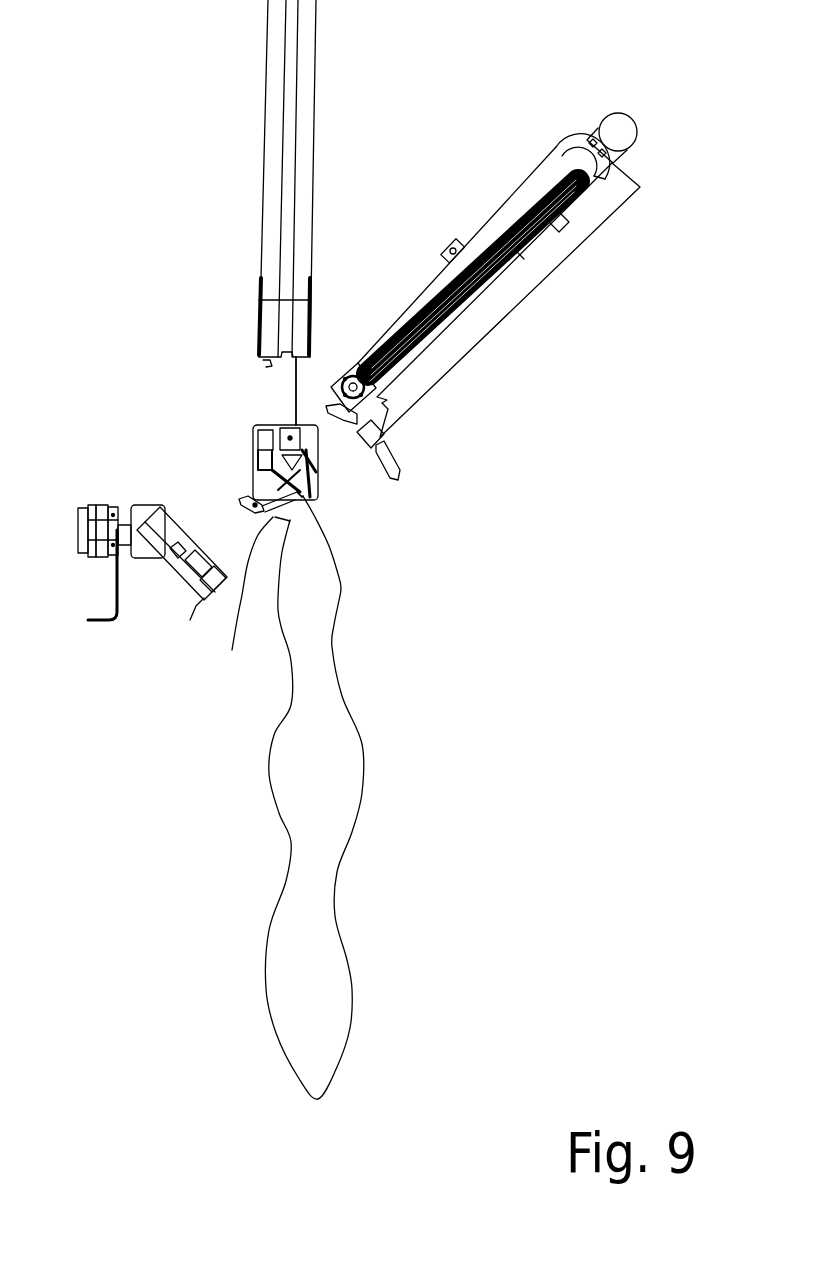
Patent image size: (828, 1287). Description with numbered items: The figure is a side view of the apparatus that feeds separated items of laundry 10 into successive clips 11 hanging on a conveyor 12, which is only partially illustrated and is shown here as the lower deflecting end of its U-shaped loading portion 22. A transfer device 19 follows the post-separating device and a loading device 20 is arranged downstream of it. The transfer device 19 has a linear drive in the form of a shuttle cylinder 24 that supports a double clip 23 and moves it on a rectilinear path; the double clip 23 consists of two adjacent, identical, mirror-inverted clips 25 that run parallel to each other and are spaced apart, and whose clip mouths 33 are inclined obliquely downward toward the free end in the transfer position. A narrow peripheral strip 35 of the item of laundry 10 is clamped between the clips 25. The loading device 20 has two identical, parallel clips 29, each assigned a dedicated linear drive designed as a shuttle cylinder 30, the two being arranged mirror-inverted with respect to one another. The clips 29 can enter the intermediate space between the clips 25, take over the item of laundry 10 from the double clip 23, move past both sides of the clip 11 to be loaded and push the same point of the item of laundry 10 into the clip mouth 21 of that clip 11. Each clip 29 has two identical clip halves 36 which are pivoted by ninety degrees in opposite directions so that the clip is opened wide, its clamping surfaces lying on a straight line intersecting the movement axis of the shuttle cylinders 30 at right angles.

The item of laundry 10 is at (325, 996).
The clip 11 is at (253, 450).
The conveyor 12 is at (363, 183).
The U-shaped loading portion 22 is at (287, 183).
The transfer device 19 is at (136, 537).
The loading device 20 is at (485, 259).
The clip mouth 21 is at (232, 650).
The double clip 23 is at (172, 485).
The shuttle cylinder 24 is at (100, 508).
The clip 25 is at (197, 583).
The clip 29 is at (375, 470).
The shuttle cylinder 30 is at (525, 218).
The clip mouth 33 is at (202, 592).
The peripheral strip 35 is at (293, 500).
The clip half 36 is at (318, 408).